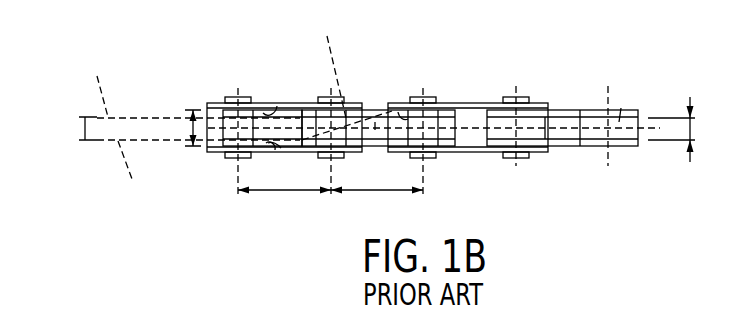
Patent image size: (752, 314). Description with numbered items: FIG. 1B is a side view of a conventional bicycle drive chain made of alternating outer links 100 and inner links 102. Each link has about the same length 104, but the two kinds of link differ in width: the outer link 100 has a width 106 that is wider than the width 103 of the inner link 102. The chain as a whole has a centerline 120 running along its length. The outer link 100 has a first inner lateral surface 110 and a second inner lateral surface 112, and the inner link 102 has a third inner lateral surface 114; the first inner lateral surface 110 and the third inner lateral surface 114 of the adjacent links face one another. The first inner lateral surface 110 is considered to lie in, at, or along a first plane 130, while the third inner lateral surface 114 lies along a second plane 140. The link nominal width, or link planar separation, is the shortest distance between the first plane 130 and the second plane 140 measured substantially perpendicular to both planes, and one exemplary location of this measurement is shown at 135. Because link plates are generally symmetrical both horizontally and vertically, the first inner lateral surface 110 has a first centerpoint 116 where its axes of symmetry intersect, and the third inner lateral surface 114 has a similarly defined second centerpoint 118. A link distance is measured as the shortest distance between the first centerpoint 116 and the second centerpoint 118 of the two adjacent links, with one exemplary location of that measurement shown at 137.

The outer link 100 is at (298, 103).
The inner link 102 is at (372, 108).
The width of the inner link 103 is at (694, 129).
The length of each link 104 is at (330, 204).
The width of the outer link 106 is at (193, 118).
The first inner lateral surface 110 is at (275, 150).
The second inner lateral surface 112 is at (277, 106).
The third inner lateral surface 114 is at (398, 112).
The first centerpoint 116 is at (281, 148).
The second centerpoint 118 is at (375, 122).
The centerline 120 is at (621, 108).
The first plane 130 is at (133, 175).
The location of measurement of link planar separation 135 is at (85, 128).
The location of measurement of link distance 137 is at (329, 63).
The second plane 140 is at (97, 83).